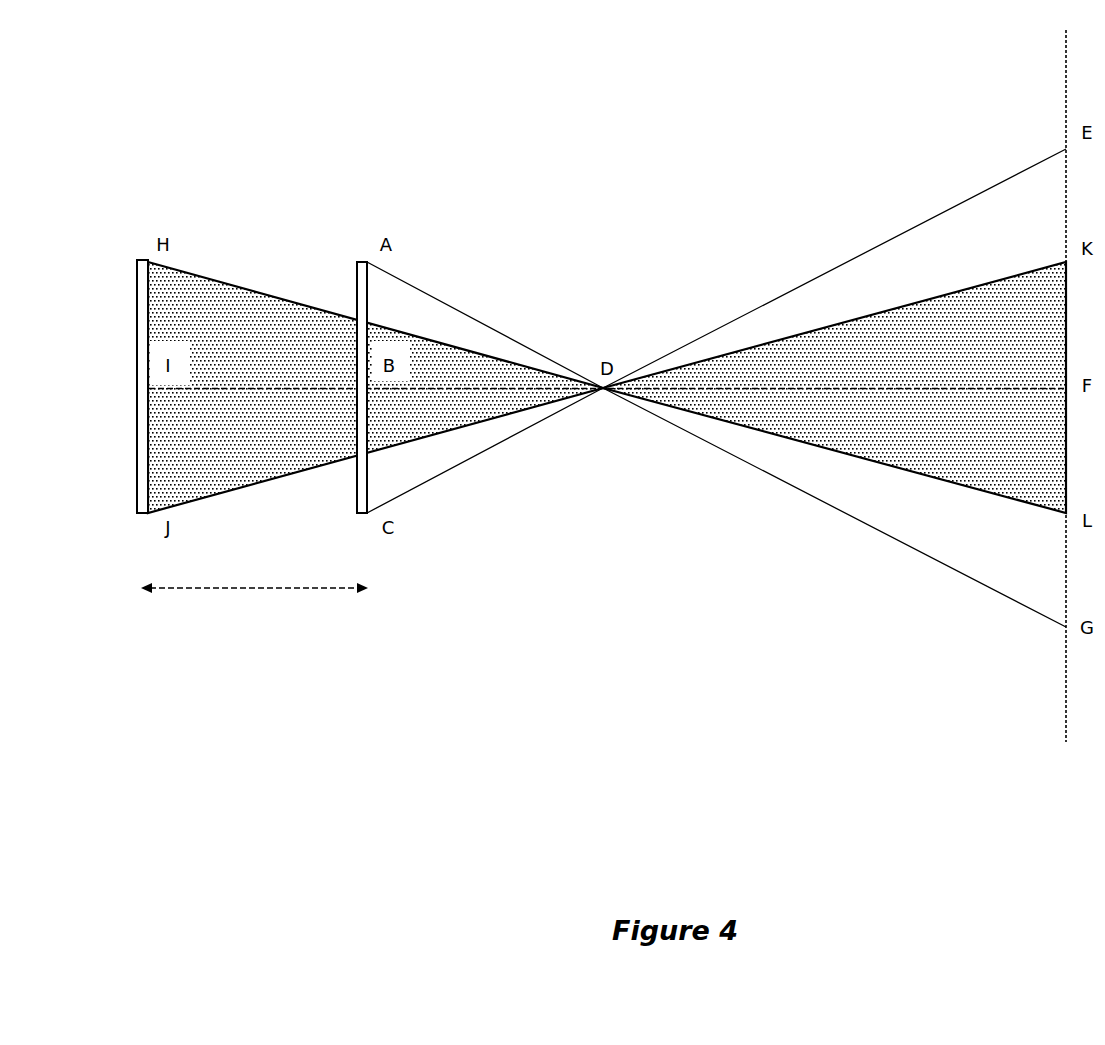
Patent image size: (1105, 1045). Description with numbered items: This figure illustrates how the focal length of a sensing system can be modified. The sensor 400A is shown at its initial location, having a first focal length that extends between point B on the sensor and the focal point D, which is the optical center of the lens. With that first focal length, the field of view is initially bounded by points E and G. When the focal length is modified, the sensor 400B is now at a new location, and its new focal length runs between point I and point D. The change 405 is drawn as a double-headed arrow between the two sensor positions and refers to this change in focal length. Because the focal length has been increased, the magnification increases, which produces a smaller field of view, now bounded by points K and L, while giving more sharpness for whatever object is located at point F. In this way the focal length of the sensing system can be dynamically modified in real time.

The sensor 400A is at (308, 323).
The sensor 400B is at (97, 323).
The change 405 is at (264, 662).